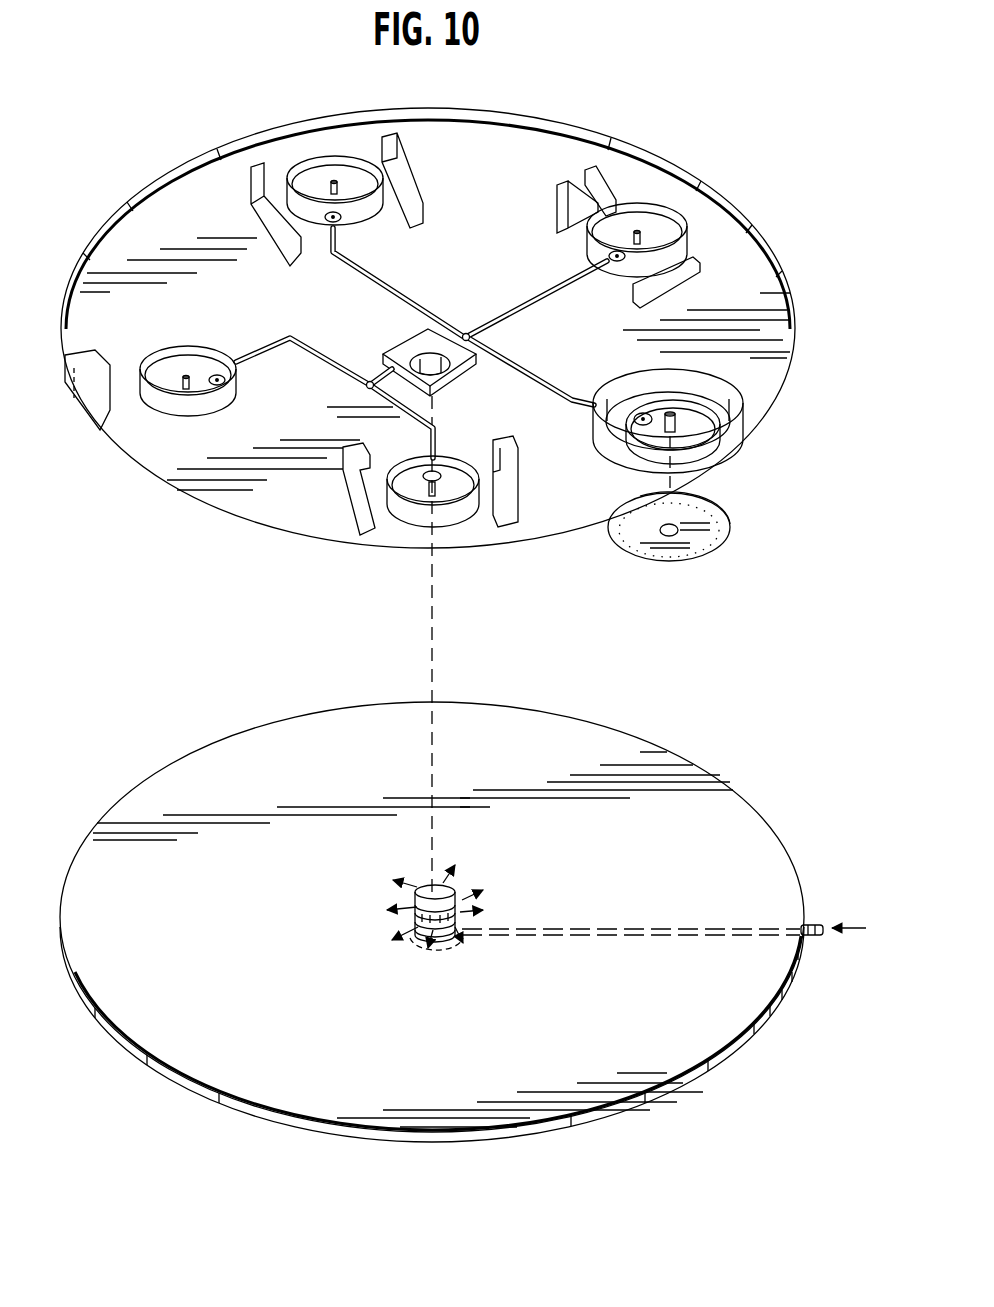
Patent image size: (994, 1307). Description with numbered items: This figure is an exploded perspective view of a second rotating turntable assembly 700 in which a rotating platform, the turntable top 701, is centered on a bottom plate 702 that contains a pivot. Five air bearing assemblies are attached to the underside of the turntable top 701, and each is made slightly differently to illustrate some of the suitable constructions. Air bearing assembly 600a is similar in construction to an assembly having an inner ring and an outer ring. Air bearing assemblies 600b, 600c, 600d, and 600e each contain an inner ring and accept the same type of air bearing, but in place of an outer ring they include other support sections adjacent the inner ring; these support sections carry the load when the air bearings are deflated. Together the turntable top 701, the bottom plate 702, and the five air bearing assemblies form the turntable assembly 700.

The second rotating turntable assembly 700 is at (843, 375).
The turntable top 701 is at (636, 150).
The bottom plate 702 is at (748, 1040).
The air bearing assembly 600a is at (758, 428).
The air bearing assembly 600b is at (696, 212).
The air bearing assembly 600c is at (292, 152).
The air bearing assembly 600d is at (187, 432).
The air bearing assembly 600e is at (407, 538).